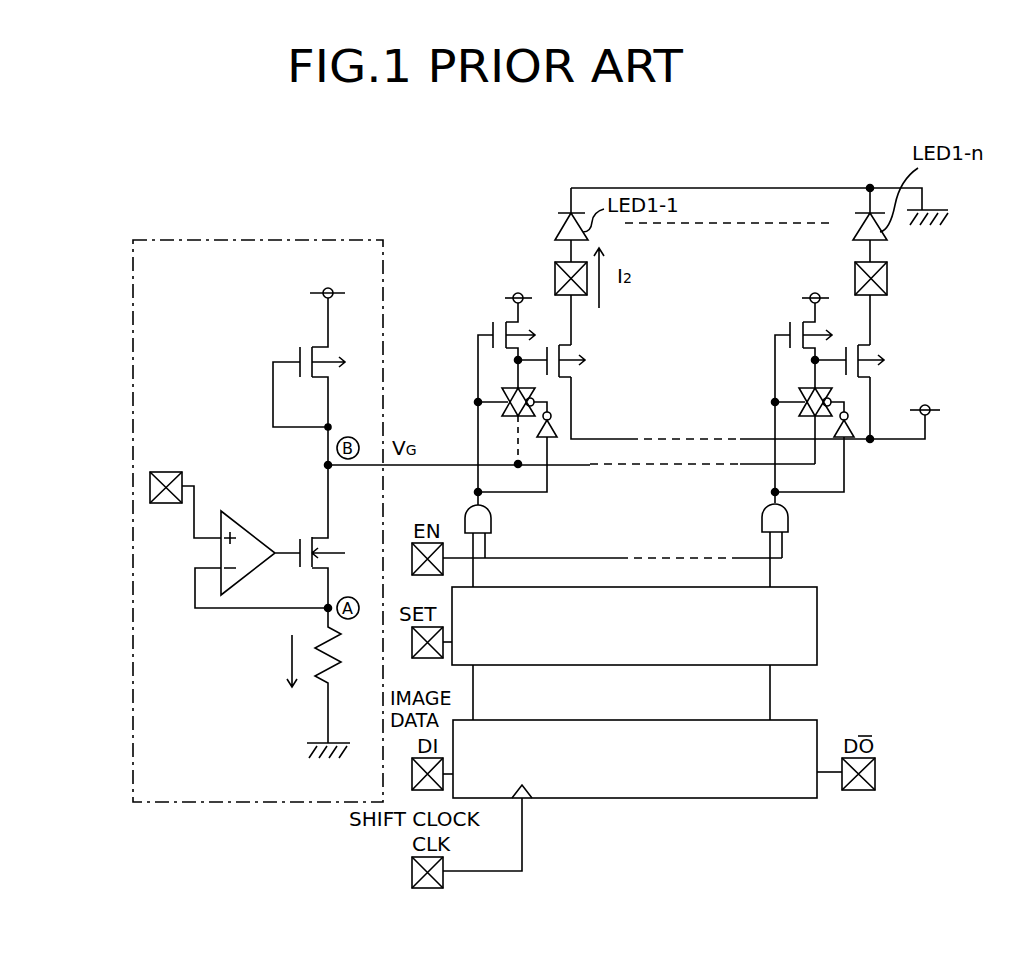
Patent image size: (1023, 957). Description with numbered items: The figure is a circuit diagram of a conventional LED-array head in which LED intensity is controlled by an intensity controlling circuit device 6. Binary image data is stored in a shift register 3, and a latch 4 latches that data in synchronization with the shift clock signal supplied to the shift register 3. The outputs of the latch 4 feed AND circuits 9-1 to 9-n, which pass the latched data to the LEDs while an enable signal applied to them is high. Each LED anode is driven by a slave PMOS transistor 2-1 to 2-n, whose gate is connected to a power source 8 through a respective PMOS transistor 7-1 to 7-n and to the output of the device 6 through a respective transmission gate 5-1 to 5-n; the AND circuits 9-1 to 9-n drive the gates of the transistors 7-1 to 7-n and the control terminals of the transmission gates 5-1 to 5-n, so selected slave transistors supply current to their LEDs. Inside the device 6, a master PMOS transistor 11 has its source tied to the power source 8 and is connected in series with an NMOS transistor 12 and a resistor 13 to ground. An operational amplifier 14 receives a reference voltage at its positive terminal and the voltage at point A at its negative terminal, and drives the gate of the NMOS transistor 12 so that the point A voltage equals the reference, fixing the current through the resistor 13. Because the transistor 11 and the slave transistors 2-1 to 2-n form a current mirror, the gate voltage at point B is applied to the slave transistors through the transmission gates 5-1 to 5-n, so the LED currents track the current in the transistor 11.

The intensity controlling circuit device 6 is at (133, 318).
The power source 8 is at (325, 289).
The PMOS transistor 11 is at (283, 354).
The NMOS transistor 12 is at (333, 521).
The resistor 13 is at (323, 678).
The operational amplifier 14 is at (236, 519).
The PMOS transistor 7-1 is at (498, 322).
The PMOS transistor 7-n is at (797, 323).
The PMOS transistor 2-1 is at (574, 371).
The PMOS transistor 2-n is at (874, 371).
The transmission gate 5-1 is at (501, 406).
The transmission gate 5-n is at (828, 387).
The AND circuit 9-1 is at (492, 519).
The AND circuit 9-n is at (789, 518).
The latch 4 is at (820, 609).
The shift register 3 is at (712, 800).